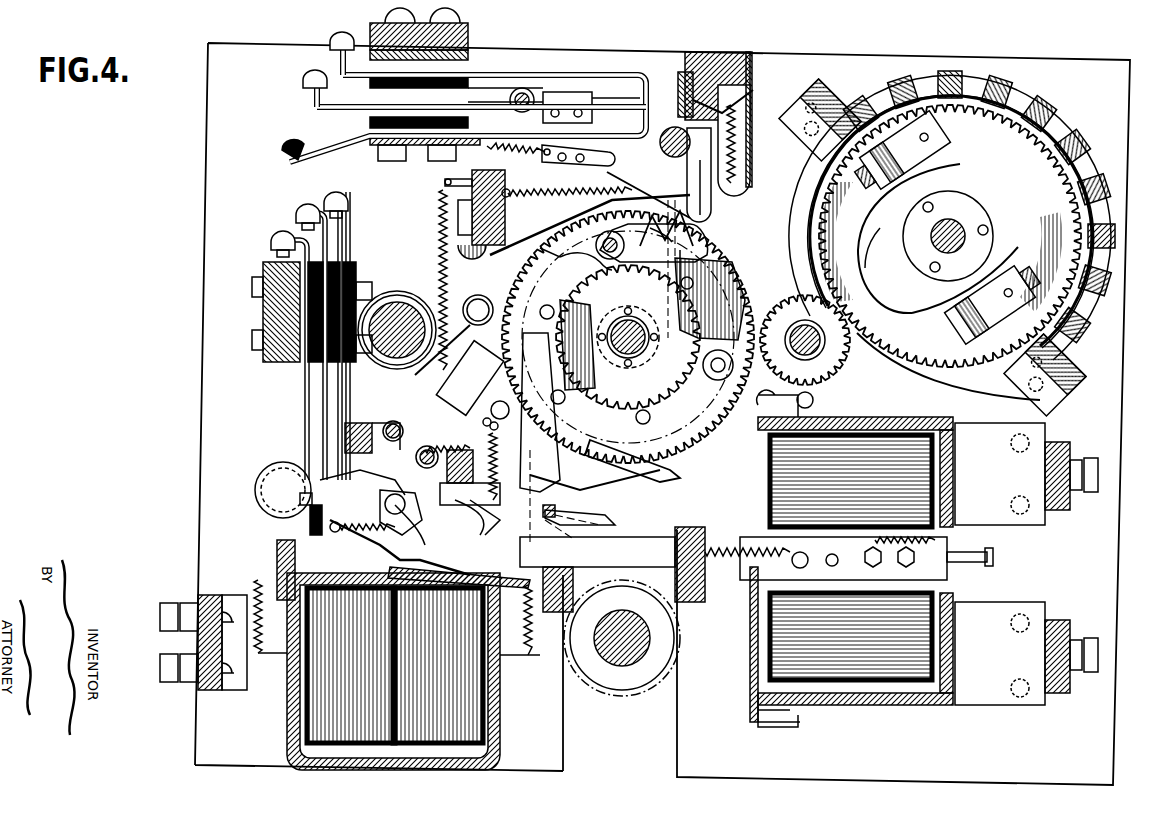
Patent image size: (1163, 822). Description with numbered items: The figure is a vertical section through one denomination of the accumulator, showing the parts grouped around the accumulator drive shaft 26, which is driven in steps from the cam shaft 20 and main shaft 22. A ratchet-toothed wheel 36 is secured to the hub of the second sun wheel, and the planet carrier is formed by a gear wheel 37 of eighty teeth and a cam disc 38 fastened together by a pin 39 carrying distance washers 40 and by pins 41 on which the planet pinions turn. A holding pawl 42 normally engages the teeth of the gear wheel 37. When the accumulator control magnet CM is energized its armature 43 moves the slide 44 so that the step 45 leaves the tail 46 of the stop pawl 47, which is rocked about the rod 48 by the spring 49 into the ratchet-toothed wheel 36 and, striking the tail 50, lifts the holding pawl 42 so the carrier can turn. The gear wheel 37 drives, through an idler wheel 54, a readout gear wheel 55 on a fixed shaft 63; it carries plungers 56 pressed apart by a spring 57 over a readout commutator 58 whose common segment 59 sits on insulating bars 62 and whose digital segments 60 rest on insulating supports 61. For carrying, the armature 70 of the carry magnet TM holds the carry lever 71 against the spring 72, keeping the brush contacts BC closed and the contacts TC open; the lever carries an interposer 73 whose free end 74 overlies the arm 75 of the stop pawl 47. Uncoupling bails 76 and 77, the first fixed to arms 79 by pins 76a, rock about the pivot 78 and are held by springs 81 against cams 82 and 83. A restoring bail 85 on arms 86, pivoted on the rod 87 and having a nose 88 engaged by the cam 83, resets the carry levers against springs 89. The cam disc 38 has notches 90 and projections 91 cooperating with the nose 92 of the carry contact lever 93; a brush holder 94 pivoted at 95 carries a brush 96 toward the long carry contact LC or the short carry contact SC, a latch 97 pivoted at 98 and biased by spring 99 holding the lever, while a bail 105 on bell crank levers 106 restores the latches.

The cam shaft 20 is at (398, 322).
The main shaft 22 is at (620, 668).
The accumulator drive shaft 26 is at (627, 350).
The ratchet-toothed wheel 36 is at (580, 300).
The gear wheel 37 is at (530, 250).
The cam disc 38 is at (706, 247).
The pin 39 is at (598, 244).
The distance washers 40 is at (603, 238).
The pins 41 is at (545, 310).
The holding pawl 42 is at (680, 480).
The armature 43 is at (752, 660).
The slide 44 is at (745, 600).
The step 45 is at (625, 548).
The tail 46 is at (618, 520).
The stop pawl 47 is at (528, 365).
The rod 48 is at (550, 508).
The spring 49 is at (470, 494).
The tail 50 is at (568, 445).
The idler wheel 54 is at (840, 368).
The readout gear wheel 55 is at (835, 258).
The plungers 56 is at (912, 152).
The spring 57 is at (938, 238).
The readout commutator 58 is at (1090, 170).
The common segment 59 is at (967, 382).
The digital segments 60 is at (1078, 322).
The insulating supports 61 is at (1092, 256).
The insulating bars 62 is at (805, 100).
The fixed shaft 63 is at (962, 228).
The armature 70 is at (397, 597).
The carry lever 71 is at (358, 590).
The spring 72 is at (500, 401).
The interposer 73 is at (400, 540).
The free end 74 is at (472, 528).
The arm 75 is at (470, 540).
The first uncoupling bail 76 is at (494, 462).
The pins 76a is at (357, 502).
The second uncoupling bail 77 is at (494, 482).
The pivot 78 is at (262, 475).
The arms 79 is at (420, 374).
The springs 81 is at (425, 590).
The cams 82 is at (360, 362).
The cams 83 is at (372, 290).
The restoring bail 85 is at (494, 440).
The arms 86 is at (425, 490).
The rod 87 is at (390, 424).
The nose 88 is at (470, 318).
The springs 89 is at (441, 218).
The notches 90 is at (698, 234).
The projection 91 is at (640, 430).
The nose 92 is at (705, 212).
The carry contact lever 93 is at (630, 180).
The brush holder 94 is at (575, 110).
The pivot 95 is at (523, 90).
The brush 96 is at (620, 105).
The latch 97 is at (522, 155).
The pivot 98 is at (740, 95).
The spring 99 is at (750, 150).
The bail 105 is at (700, 80).
The bell crank levers 106 is at (496, 262).
The long carry contact LC is at (648, 122).
The short carry contact SC is at (673, 126).
The contacts TC is at (322, 455).
The brush contacts BC is at (300, 500).
The accumulator control magnet CM is at (893, 446).
The carry magnet TM is at (462, 712).